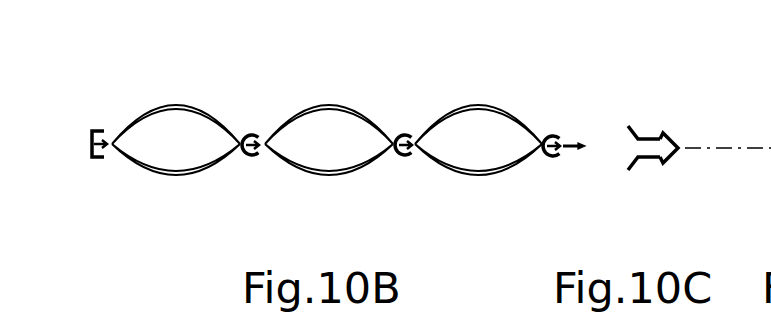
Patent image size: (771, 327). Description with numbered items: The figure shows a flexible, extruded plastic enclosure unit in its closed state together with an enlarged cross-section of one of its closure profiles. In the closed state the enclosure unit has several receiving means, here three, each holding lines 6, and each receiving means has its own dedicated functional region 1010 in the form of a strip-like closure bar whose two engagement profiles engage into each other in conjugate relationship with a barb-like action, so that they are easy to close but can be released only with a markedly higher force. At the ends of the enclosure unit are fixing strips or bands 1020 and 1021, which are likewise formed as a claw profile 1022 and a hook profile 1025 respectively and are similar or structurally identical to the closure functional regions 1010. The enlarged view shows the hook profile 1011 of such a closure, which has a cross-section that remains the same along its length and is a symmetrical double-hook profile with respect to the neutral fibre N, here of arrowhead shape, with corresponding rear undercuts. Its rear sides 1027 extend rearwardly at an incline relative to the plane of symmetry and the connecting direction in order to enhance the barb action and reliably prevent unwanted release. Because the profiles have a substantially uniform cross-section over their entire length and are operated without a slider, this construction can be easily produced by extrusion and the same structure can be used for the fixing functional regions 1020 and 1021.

In FIG. 10B, the lines 6 is at (169, 153).
In FIG. 10B, the fixing strip 1020 is at (95, 118).
In FIG. 10B, the claw profile 1022 is at (92, 158).
In FIG. 10B, the functional region 1010 is at (253, 118).
In FIG. 10B, the hook profile 1025 is at (580, 138).
In FIG. 10B, the fixing band 1021 is at (578, 164).
In FIG. 10C, the rear sides 1027 is at (655, 137).
In FIG. 10C, the hook profile 1011 is at (680, 126).
In FIG. 10C, the neutral fibre N is at (728, 150).